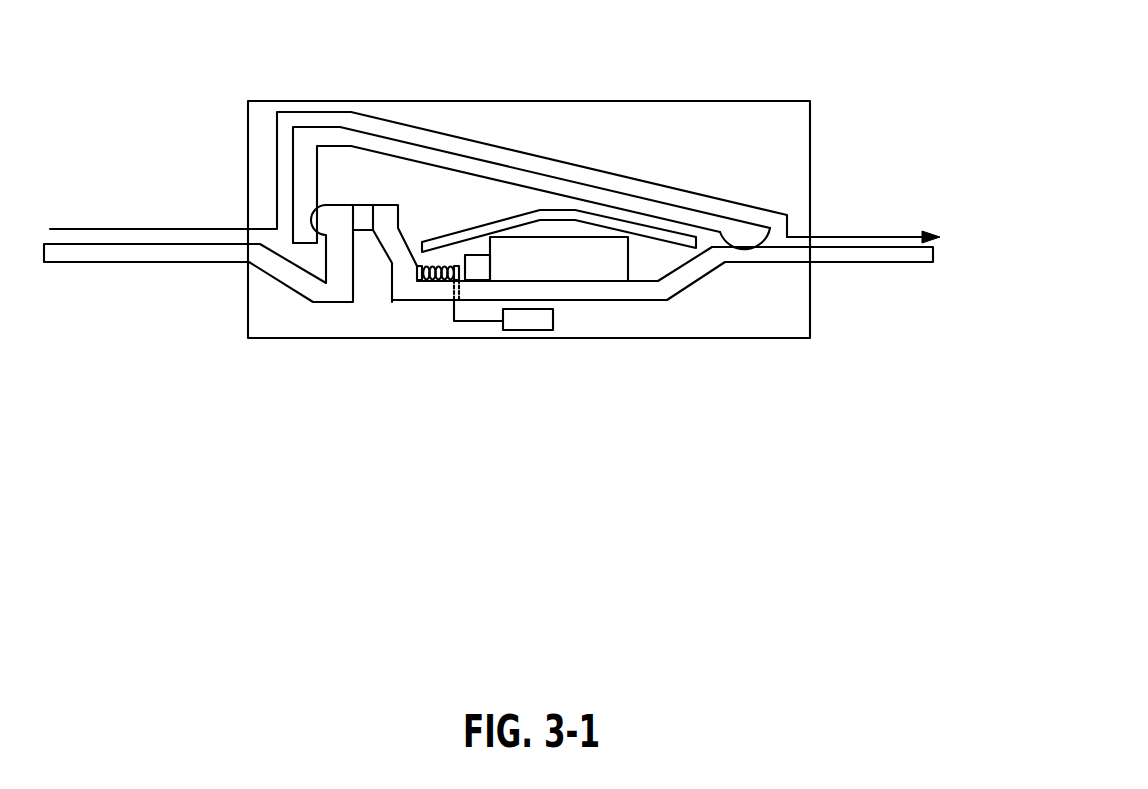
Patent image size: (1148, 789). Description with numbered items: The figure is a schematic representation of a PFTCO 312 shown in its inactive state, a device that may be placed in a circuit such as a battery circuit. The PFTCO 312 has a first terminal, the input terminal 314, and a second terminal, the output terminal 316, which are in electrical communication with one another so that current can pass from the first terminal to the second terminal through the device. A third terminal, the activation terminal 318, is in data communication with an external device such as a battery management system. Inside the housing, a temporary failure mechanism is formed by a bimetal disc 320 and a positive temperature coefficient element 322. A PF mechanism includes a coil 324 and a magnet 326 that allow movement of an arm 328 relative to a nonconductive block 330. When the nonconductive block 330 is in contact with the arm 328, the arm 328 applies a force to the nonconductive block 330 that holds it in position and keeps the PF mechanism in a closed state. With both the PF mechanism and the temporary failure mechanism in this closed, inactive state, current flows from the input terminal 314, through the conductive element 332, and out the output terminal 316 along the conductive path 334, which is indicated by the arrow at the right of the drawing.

The PFTCO 312 is at (868, 62).
The input terminal 314 is at (183, 250).
The output terminal 316 is at (860, 252).
The activation terminal 318 is at (527, 330).
The bimetal disc 320 is at (655, 235).
The positive temperature coefficient (PTC) element 322 is at (585, 262).
The coil 324 is at (440, 279).
The magnet 326 is at (478, 268).
The arm 328 is at (390, 208).
The nonconductive block 330 is at (362, 217).
The conductive element 332 is at (498, 168).
The conductive path 334 is at (877, 235).